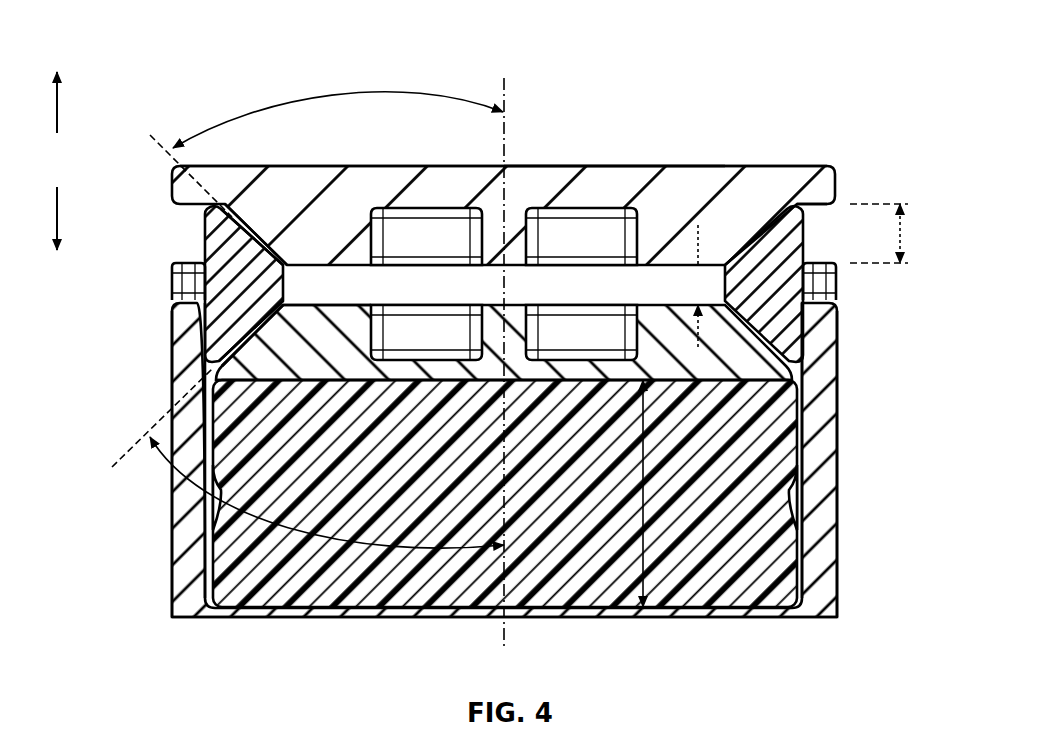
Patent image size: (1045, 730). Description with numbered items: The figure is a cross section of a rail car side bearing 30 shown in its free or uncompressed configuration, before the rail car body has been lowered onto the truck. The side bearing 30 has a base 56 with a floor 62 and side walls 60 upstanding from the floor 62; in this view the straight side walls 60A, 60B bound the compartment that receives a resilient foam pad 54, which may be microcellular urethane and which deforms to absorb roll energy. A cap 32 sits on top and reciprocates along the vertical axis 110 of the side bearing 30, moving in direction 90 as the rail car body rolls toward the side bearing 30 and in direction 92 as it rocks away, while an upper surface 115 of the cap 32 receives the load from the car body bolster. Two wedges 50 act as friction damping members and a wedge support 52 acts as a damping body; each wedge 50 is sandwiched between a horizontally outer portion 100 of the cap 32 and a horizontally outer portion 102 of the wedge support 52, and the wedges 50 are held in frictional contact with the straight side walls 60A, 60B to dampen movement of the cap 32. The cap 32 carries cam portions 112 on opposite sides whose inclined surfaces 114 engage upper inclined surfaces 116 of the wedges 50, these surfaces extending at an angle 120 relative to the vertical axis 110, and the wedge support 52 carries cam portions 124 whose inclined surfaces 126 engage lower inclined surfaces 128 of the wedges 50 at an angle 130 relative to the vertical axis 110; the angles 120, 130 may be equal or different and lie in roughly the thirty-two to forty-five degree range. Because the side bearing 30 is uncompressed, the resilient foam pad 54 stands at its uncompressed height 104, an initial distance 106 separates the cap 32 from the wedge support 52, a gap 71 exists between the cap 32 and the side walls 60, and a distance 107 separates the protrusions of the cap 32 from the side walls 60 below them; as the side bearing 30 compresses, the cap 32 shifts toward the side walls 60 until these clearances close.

The side bearing 30 is at (750, 683).
The cap 32 is at (550, 167).
The wedges 50 is at (284, 292).
The wedge support 52 is at (662, 357).
The resilient foam pad 54 is at (437, 605).
The base 56 is at (822, 448).
The side walls 60 is at (183, 553).
The straight side wall 60A is at (170, 518).
The straight side wall 60B is at (837, 493).
The floor 62 is at (312, 618).
The gap 71 is at (818, 220).
The direction 90 is at (60, 210).
The direction 92 is at (60, 108).
The horizontally outer portion of the cap 100 is at (233, 175).
The horizontally outer portion of the wedge support 102 is at (255, 370).
The uncompressed height 104 is at (647, 550).
The initial distance 106 is at (702, 236).
The distance 107 is at (903, 233).
The vertical axis 110 is at (507, 82).
The cam portions 112 is at (363, 175).
The inclined surfaces 114 is at (281, 217).
The upper surface 115 is at (652, 167).
The upper inclined surfaces 116 is at (240, 240).
The angle 120 is at (332, 93).
The cam portions 124 is at (296, 330).
The inclined surfaces 126 is at (268, 320).
The lower inclined surfaces 128 is at (250, 335).
The angle 130 is at (150, 460).